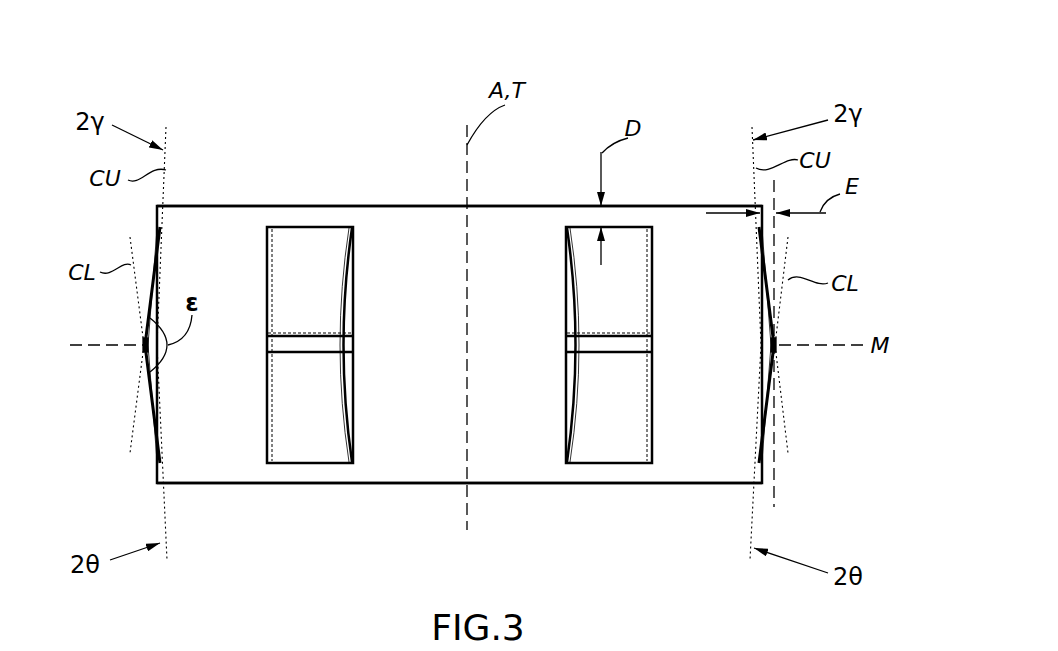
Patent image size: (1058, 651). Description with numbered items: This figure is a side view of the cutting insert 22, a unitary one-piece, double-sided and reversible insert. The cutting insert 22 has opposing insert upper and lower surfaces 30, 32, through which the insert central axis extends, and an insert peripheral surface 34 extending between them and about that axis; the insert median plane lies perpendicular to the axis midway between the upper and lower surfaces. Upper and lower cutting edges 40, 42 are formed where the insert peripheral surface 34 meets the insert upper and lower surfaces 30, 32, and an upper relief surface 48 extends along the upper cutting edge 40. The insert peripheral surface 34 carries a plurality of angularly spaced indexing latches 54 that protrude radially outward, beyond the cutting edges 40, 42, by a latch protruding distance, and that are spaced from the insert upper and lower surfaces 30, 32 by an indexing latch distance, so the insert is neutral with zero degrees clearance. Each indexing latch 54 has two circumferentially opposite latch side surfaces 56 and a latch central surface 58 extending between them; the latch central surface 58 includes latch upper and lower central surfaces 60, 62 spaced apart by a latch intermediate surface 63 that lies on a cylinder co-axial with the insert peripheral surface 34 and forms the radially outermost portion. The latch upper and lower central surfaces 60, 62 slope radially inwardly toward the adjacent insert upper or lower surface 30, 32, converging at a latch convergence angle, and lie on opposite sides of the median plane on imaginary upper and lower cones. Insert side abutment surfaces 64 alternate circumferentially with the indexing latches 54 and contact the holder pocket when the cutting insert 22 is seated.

The cutting insert 22 is at (808, 98).
The insert upper surface 30 is at (289, 188).
The insert lower surface 32 is at (306, 487).
The insert peripheral surface 34 is at (525, 455).
The upper cutting edge 40 is at (377, 205).
The lower cutting edge 42 is at (388, 483).
The upper relief surface 48 is at (209, 249).
The indexing latch 54 is at (803, 265).
The latch side surface 56 is at (344, 357).
The latch central surface 58 is at (182, 458).
The latch upper central surface 60 is at (292, 300).
The latch lower central surface 62 is at (292, 440).
The latch intermediate surface 63 is at (316, 345).
The insert side abutment surface 64 is at (215, 368).